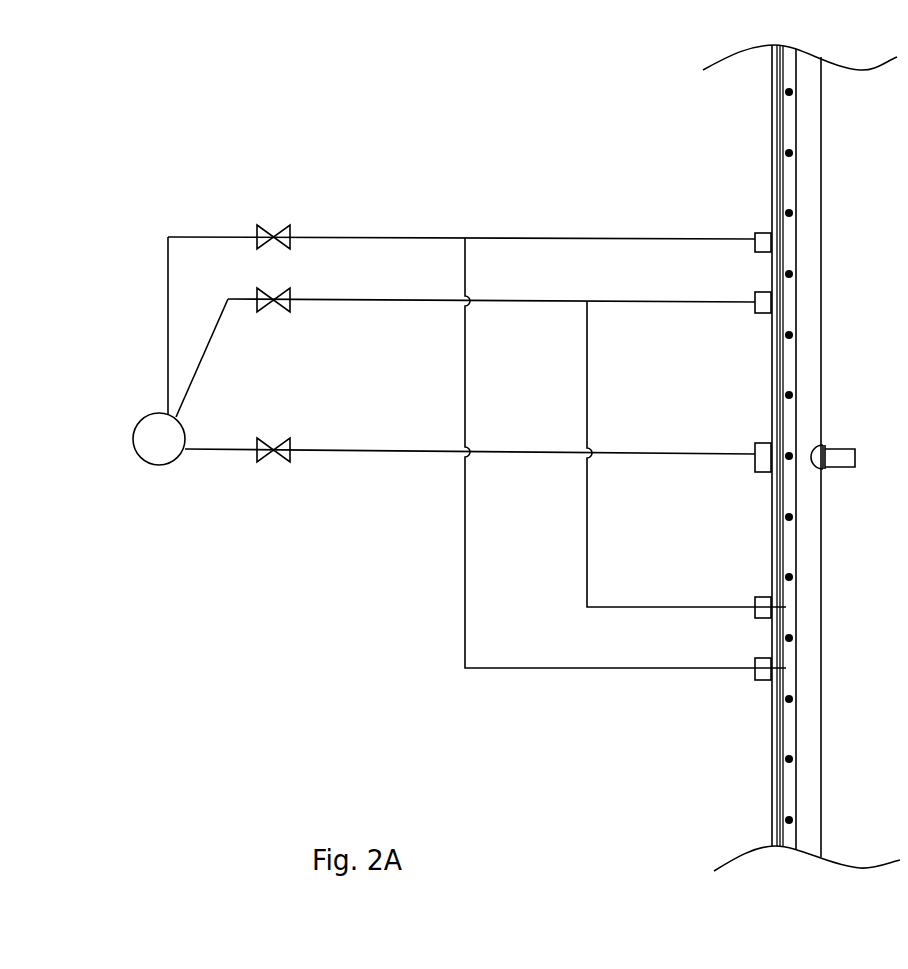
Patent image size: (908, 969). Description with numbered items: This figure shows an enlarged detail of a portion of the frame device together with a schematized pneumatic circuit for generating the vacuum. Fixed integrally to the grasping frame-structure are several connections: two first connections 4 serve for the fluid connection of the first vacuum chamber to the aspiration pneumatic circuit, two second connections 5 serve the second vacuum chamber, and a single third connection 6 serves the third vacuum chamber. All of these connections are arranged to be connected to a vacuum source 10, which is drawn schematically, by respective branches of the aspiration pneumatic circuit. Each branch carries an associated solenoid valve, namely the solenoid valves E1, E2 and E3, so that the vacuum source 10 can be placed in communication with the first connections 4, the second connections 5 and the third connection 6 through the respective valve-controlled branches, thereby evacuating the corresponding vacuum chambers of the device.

The vacuum source 10 is at (143, 457).
The second connections 5 is at (760, 237).
The first connections 4 is at (765, 305).
The third connection 6 is at (765, 458).
The solenoid valve E1 is at (278, 323).
The solenoid valve E2 is at (284, 211).
The solenoid valve E3 is at (276, 475).